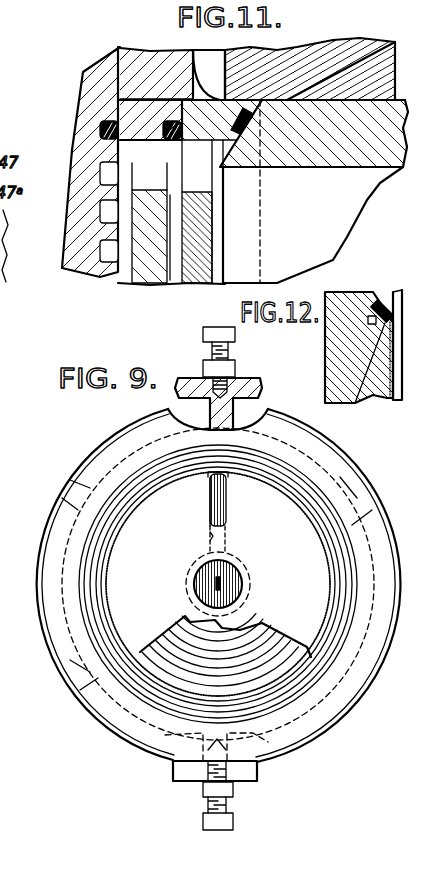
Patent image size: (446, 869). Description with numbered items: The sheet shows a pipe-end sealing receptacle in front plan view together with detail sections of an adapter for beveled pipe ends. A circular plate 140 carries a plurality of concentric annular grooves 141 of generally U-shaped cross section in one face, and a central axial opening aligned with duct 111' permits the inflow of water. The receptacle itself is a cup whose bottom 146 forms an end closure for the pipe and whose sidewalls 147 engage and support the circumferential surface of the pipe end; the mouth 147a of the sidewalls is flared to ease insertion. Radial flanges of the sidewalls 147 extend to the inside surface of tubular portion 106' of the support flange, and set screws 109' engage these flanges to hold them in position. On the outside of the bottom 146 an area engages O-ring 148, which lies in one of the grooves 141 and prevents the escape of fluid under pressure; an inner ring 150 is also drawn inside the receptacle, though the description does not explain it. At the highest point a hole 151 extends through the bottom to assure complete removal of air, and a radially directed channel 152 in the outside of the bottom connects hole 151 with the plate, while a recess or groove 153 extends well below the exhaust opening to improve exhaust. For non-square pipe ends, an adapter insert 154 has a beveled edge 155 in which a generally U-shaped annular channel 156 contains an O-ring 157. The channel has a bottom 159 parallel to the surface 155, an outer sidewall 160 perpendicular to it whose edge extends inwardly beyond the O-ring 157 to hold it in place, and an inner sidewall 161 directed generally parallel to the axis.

In FIG. 11, the circular plate 140 is at (98, 89).
In FIG. 9, the circular plate 140 is at (237, 683).
In FIG. 11, the concentric annular grooves 141 is at (100, 262).
In FIG. 9, the concentric annular grooves 141 is at (250, 653).
In FIG. 11, the bottom 146 is at (155, 276).
In FIG. 11, the sidewalls 147 is at (318, 68).
In FIG. 9, the sidewalls 147 is at (343, 467).
In FIG. 9, the mouth 147a is at (143, 463).
In FIG. 11, the O-ring 148 is at (100, 130).
In FIG. 9, the O-ring 148 is at (182, 682).
In FIG. 9, the inner liner 150 is at (112, 570).
In FIG. 11, the hole 151 is at (128, 144).
In FIG. 9, the hole 151 is at (211, 487).
In FIG. 11, the radially directed channel 152 is at (122, 276).
In FIG. 9, the radially directed channel 152 is at (212, 536).
In FIG. 11, the recess or groove 153 is at (170, 275).
In FIG. 9, the recess or groove 153 is at (224, 498).
In FIG. 11, the insert 154 is at (208, 247).
In FIG. 12, the insert 154 is at (340, 402).
In FIG. 11, the beveled edge 155 is at (243, 166).
In FIG. 12, the beveled edge 155 is at (397, 303).
In FIG. 11, the annular channel 156 is at (222, 130).
In FIG. 12, the annular channel 156 is at (378, 332).
In FIG. 11, the O-ring 157 is at (208, 78).
In FIG. 12, the O-ring 157 is at (380, 302).
In FIG. 12, the bottom 159 is at (368, 319).
In FIG. 12, the outer sidewall 160 is at (385, 303).
In FIG. 12, the inner sidewall 161 is at (382, 330).
In FIG. 9, the tubular portion of support flange 106' is at (236, 403).
In FIG. 9, the set screws 109' is at (224, 578).
In FIG. 9, the duct 111' is at (239, 584).